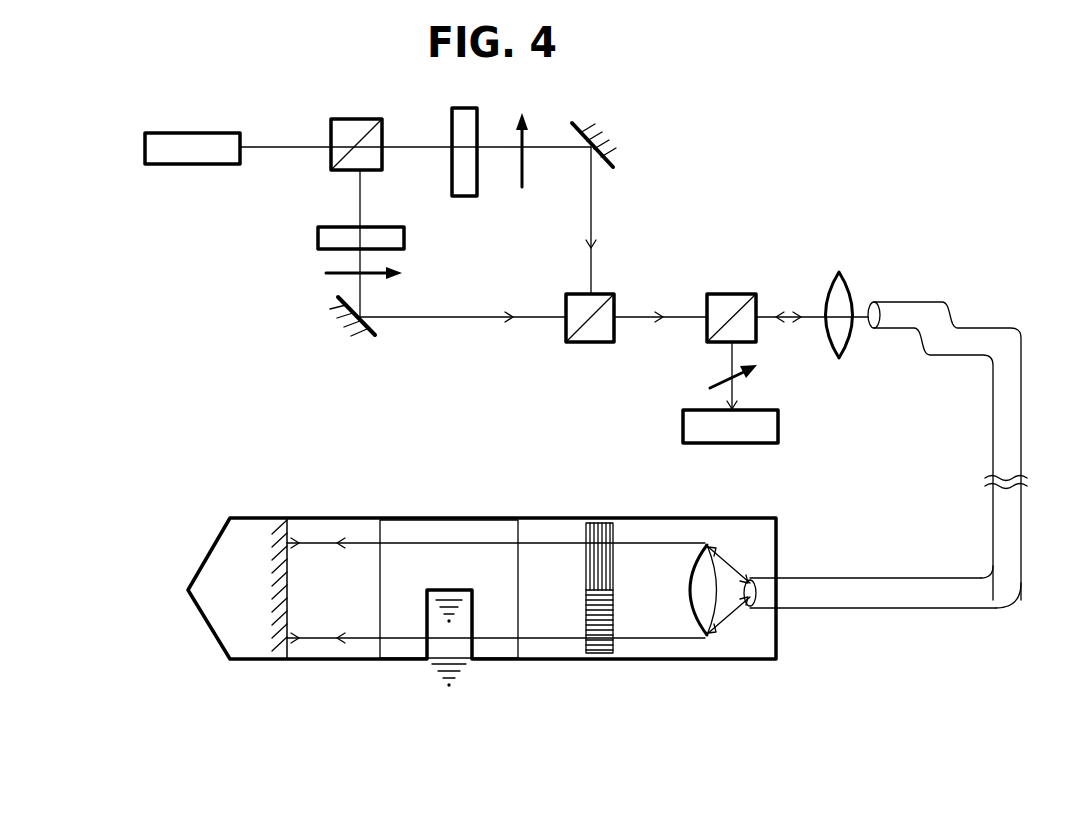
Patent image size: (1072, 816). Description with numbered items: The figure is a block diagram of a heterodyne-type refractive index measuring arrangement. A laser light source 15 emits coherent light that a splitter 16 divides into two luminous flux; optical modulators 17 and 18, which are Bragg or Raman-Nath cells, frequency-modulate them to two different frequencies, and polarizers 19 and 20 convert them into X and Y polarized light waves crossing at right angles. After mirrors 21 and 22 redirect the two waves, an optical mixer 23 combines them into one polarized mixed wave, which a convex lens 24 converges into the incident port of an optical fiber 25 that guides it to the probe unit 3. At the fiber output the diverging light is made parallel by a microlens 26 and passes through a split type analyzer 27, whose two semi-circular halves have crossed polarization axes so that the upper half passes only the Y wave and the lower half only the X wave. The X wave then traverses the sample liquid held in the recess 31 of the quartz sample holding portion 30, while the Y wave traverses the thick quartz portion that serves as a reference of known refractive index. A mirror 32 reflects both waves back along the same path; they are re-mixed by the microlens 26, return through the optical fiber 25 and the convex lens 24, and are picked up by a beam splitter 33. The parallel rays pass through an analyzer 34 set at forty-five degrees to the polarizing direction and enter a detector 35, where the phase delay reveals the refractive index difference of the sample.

The probe unit 3 is at (215, 610).
The light source 15 is at (210, 133).
The splitter 16 is at (346, 131).
The optical modulator 17 is at (461, 124).
The optical modulator 18 is at (318, 240).
The polarizer 19 is at (527, 141).
The polarizer 20 is at (326, 268).
The mirror 21 is at (616, 150).
The mirror 22 is at (348, 333).
The optical mixer 23 is at (612, 300).
The convex lens 24 is at (837, 290).
The optical fiber 25 is at (965, 345).
The microlens 26 is at (708, 578).
The split type analyzer 27 is at (606, 523).
The sample holding portion 30 is at (474, 540).
The recess 31 is at (433, 651).
The mirror 32 is at (271, 637).
The beam splitter 33 is at (740, 300).
The analyzer 34 is at (710, 386).
The detector 35 is at (683, 432).